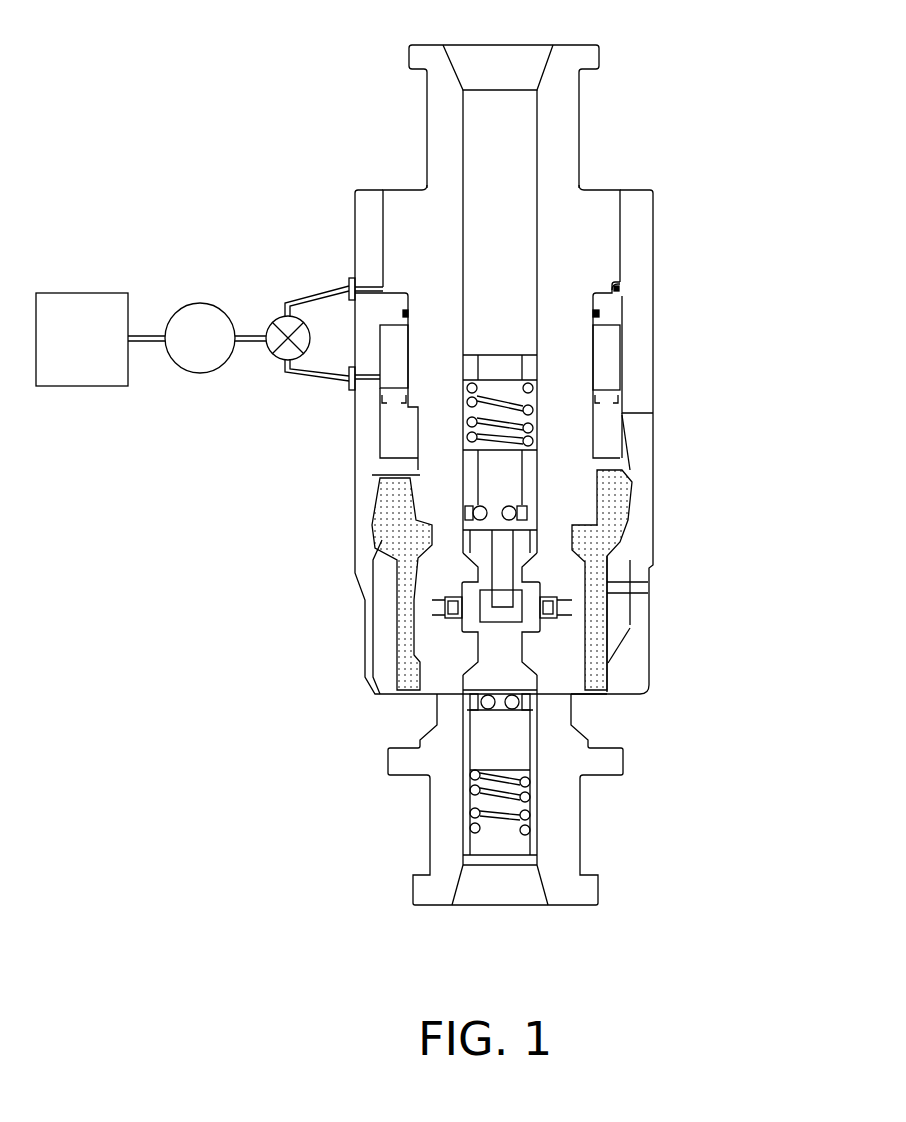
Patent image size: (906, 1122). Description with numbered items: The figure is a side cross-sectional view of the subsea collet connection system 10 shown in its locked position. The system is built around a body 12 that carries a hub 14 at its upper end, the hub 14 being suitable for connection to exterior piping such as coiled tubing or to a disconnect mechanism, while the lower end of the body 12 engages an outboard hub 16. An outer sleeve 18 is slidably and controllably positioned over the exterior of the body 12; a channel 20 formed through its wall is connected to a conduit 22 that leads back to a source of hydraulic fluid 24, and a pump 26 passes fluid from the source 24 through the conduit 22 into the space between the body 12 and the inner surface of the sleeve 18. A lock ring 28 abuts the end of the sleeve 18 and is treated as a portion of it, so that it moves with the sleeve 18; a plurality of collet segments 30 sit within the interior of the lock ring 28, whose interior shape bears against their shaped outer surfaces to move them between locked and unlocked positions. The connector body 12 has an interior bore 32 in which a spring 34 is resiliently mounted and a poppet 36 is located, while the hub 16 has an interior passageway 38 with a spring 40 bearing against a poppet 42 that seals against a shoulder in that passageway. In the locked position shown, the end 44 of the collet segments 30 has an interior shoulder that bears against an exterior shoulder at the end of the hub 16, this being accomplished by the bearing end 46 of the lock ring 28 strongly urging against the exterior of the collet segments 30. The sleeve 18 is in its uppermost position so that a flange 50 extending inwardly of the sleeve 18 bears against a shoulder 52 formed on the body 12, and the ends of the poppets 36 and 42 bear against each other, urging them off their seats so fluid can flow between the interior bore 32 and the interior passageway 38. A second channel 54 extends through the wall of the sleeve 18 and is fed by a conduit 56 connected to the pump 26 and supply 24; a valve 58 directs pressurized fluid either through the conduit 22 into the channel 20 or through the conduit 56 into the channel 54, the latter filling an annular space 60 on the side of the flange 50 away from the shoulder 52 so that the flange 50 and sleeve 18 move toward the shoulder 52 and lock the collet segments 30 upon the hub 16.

The subsea collet connection system 10 is at (690, 114).
The body 12 is at (600, 240).
The hub 14 is at (600, 50).
The outboard hub 16 is at (617, 762).
The outer sleeve 18 is at (655, 345).
The channel 20 is at (368, 282).
The conduit 22 is at (307, 300).
The source of hydraulic fluid 24 is at (87, 293).
The pump 26 is at (200, 375).
The lock ring 28 is at (645, 480).
The collet segments 30 is at (600, 588).
The interior bore 32 is at (530, 168).
The spring 34 is at (533, 418).
The poppet 36 is at (513, 552).
The interior passageway 38 is at (533, 845).
The spring 40 is at (507, 815).
The poppet 42 is at (485, 692).
The end of the collet segments 44 is at (590, 697).
The bearing end 46 is at (637, 678).
The flange 50 is at (599, 313).
The shoulder 52 is at (620, 290).
The channel 54 is at (370, 383).
The conduit 56 is at (303, 378).
The valve 58 is at (270, 328).
The annular space 60 is at (612, 362).